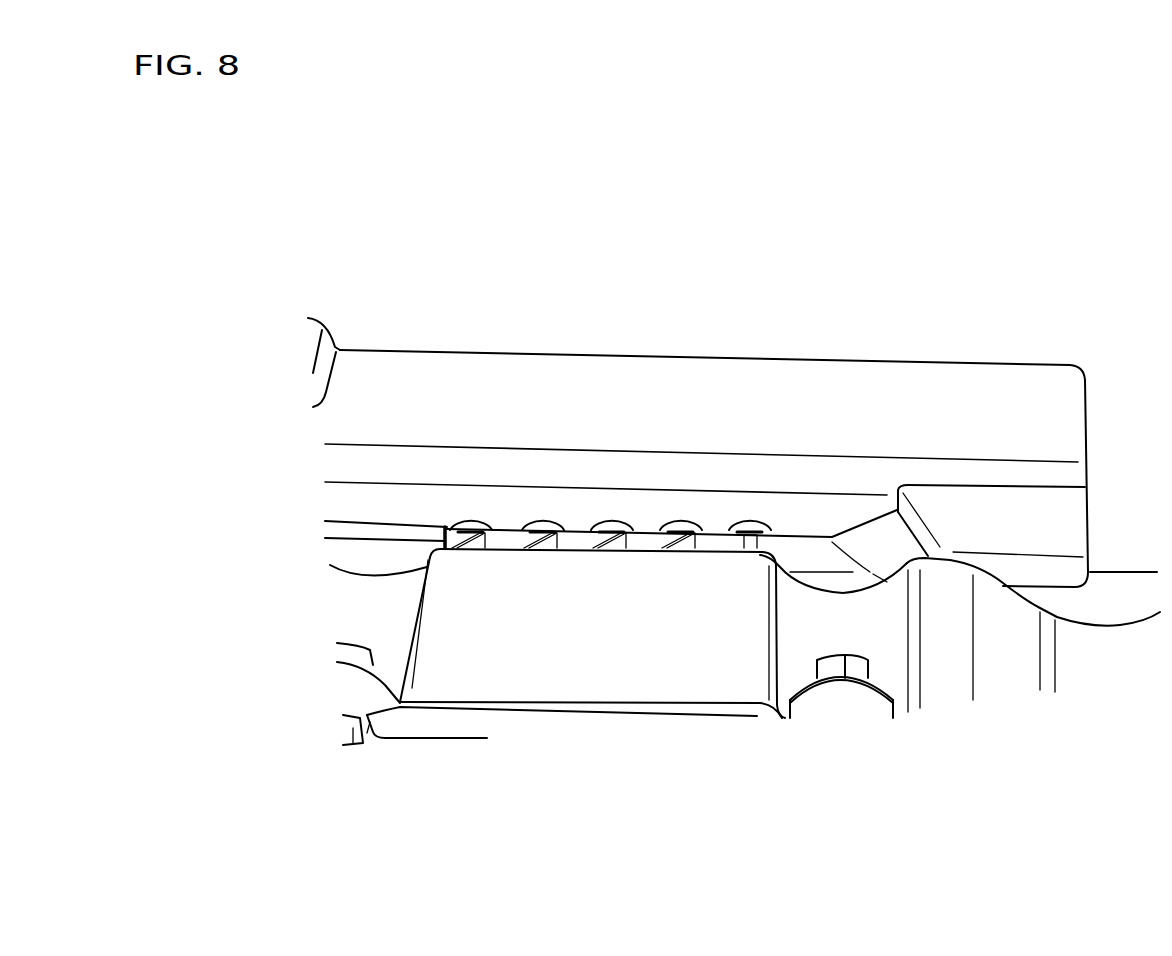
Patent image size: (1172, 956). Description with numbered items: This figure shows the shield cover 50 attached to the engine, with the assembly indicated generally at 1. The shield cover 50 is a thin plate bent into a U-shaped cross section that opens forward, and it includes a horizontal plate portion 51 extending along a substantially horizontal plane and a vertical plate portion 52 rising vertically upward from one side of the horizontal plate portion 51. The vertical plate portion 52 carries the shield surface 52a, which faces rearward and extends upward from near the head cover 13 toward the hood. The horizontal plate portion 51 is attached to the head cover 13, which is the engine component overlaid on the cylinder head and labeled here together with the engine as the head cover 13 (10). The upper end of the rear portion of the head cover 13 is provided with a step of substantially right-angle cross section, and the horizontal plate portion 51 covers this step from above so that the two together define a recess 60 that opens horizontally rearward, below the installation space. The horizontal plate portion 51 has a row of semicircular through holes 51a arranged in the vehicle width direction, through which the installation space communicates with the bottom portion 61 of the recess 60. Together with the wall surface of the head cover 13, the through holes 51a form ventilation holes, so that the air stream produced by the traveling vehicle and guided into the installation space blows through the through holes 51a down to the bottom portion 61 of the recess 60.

The battery module 1 is at (398, 243).
The shield cover 50 is at (758, 362).
The horizontal plate portion 51 is at (538, 473).
The through holes 51a is at (750, 533).
The vertical plate portion 52 is at (701, 469).
The shield surface 52a is at (648, 413).
The recess 60 is at (814, 540).
The bottom portion 61 is at (791, 556).
The head cover 13 is at (1070, 667).
The case 10 is at (975, 638).